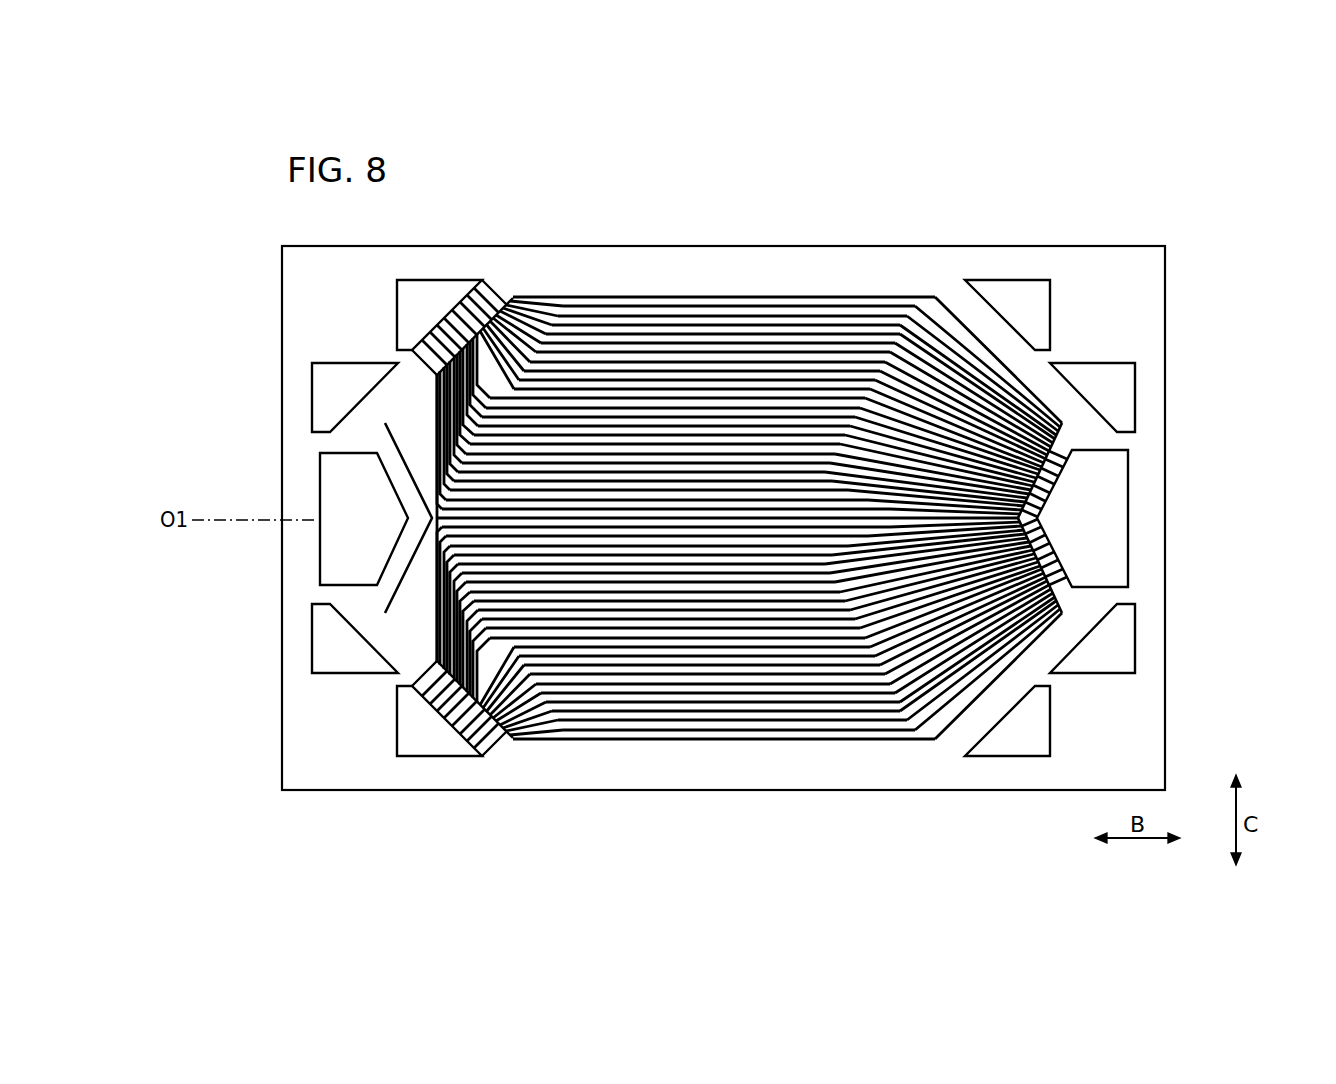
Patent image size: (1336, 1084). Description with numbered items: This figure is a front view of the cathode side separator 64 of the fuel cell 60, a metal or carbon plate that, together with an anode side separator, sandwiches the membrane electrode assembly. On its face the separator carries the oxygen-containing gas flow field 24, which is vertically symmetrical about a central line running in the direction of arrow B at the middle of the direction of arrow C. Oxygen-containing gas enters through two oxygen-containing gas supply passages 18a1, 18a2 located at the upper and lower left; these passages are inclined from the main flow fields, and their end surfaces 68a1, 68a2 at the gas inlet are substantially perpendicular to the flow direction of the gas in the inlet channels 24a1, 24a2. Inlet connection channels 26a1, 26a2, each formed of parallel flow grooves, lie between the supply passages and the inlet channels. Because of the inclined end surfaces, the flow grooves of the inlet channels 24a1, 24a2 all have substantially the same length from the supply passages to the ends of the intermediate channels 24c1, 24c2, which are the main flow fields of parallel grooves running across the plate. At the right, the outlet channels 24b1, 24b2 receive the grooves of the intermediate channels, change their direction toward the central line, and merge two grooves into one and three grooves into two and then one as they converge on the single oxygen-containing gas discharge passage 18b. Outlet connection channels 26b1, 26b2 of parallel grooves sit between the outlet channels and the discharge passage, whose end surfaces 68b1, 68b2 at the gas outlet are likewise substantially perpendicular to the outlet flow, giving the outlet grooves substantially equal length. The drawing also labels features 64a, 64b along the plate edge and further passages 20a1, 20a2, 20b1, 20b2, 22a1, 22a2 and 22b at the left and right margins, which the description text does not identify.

The fuel cell 60 is at (723, 471).
The cathode side separator 64 is at (892, 178).
The separator plate front surface 64a is at (641, 776).
The separator plate back surface 64b is at (694, 776).
The oxygen-containing gas flow field 24 is at (722, 517).
The inlet channel 24a1 is at (473, 412).
The inlet channel 24a2 is at (473, 624).
The outlet channel 24b1 is at (1040, 424).
The outlet channel 24b2 is at (1040, 612).
The intermediate channel 24c1 is at (797, 318).
The intermediate channel 24c2 is at (797, 712).
The inlet connection channel 26a1 is at (496, 300).
The inlet connection channel 26a2 is at (496, 740).
The outlet connection channel 26b1 is at (1057, 468).
The outlet connection channel 26b2 is at (1057, 568).
The end surface 68a1 is at (452, 308).
The end surface 68a2 is at (452, 728).
The end surface 68b1 is at (1045, 492).
The end surface 68b2 is at (1045, 543).
The oxygen-containing gas supply passage 18a1 is at (418, 325).
The oxygen-containing gas supply passage 18a2 is at (418, 712).
The oxygen-containing gas discharge passage 18b is at (1085, 517).
The upper coolant supply passage 20a1 is at (325, 372).
The lower coolant supply passage 20a2 is at (325, 664).
The upper coolant discharge passage 20b1 is at (1127, 372).
The lower coolant discharge passage 20b2 is at (1127, 664).
The upper fuel gas discharge passage 22a1 is at (1038, 322).
The lower fuel gas discharge passage 22a2 is at (1038, 714).
The fuel gas supply passage 22b is at (376, 518).